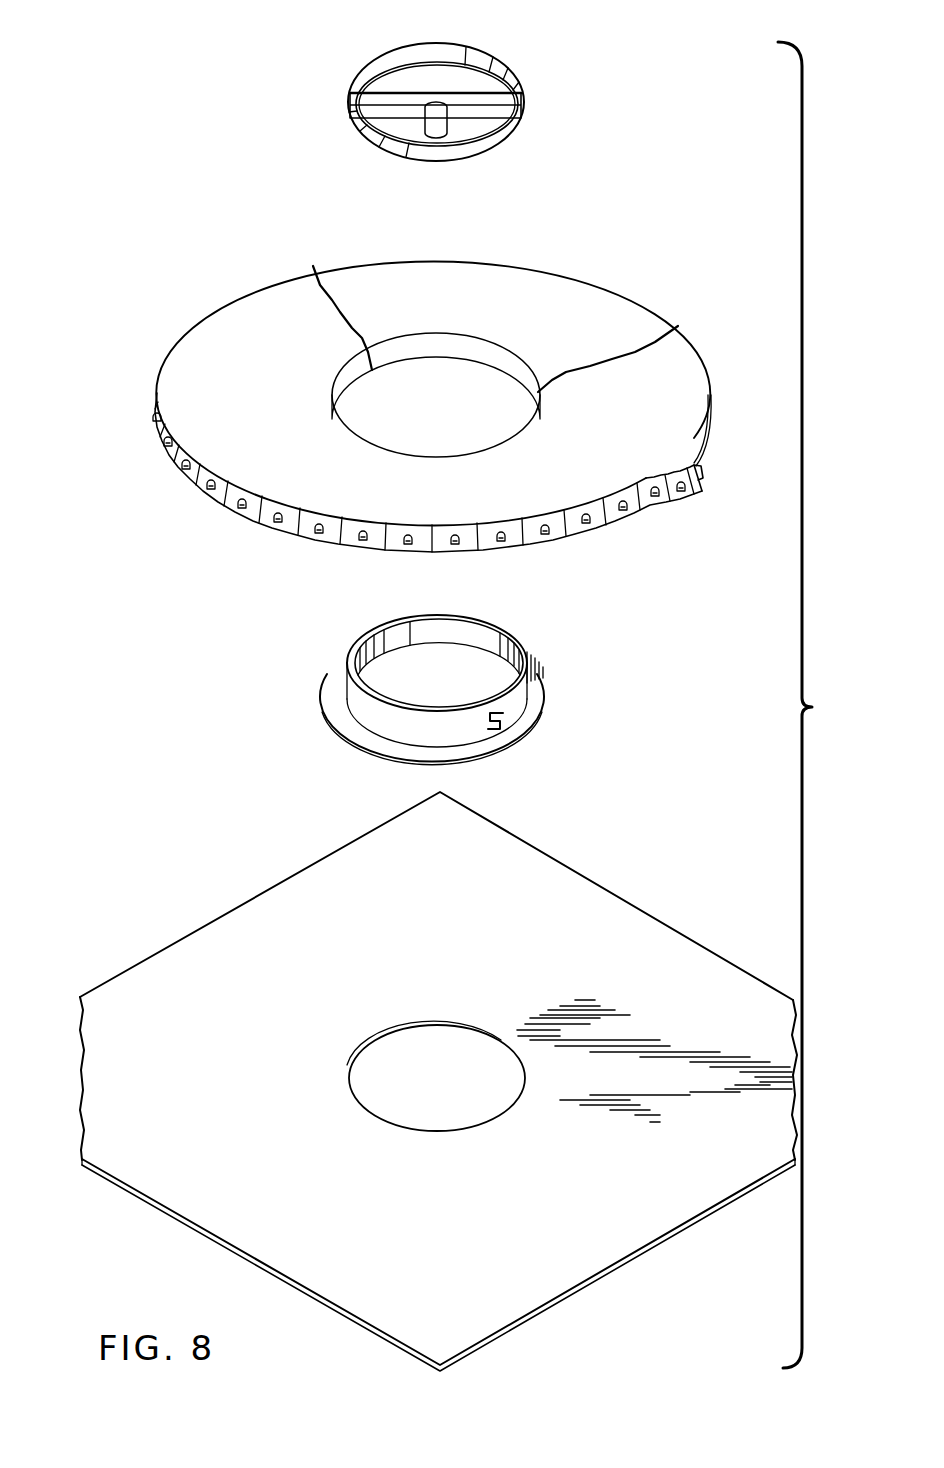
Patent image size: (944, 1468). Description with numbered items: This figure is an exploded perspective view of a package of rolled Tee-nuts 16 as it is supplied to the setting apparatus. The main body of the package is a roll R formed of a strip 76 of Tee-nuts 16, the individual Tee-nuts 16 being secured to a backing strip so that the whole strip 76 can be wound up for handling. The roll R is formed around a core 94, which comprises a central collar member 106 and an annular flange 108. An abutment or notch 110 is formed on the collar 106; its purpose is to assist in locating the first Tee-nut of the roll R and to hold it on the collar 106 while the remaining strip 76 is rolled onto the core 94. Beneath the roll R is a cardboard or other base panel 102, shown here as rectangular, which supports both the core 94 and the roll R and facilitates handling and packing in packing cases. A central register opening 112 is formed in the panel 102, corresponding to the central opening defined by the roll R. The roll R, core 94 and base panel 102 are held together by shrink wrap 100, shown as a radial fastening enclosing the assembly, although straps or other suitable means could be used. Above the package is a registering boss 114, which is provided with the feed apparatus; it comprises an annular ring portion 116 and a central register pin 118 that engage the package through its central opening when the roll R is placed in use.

The registering boss 114 is at (497, 92).
The annular ring portion 116 is at (513, 73).
The central register pin 118 is at (447, 122).
The roll R is at (455, 391).
The shrink wrap 100 is at (425, 292).
The Tee-nut 16 is at (455, 502).
The strip of Tee-nuts 76 is at (694, 470).
The core 94 is at (423, 684).
The central collar member 106 is at (500, 631).
The annular flange 108 is at (545, 686).
The notch 110 is at (506, 727).
The base panel 102 is at (438, 1081).
The central register opening 112 is at (406, 1027).